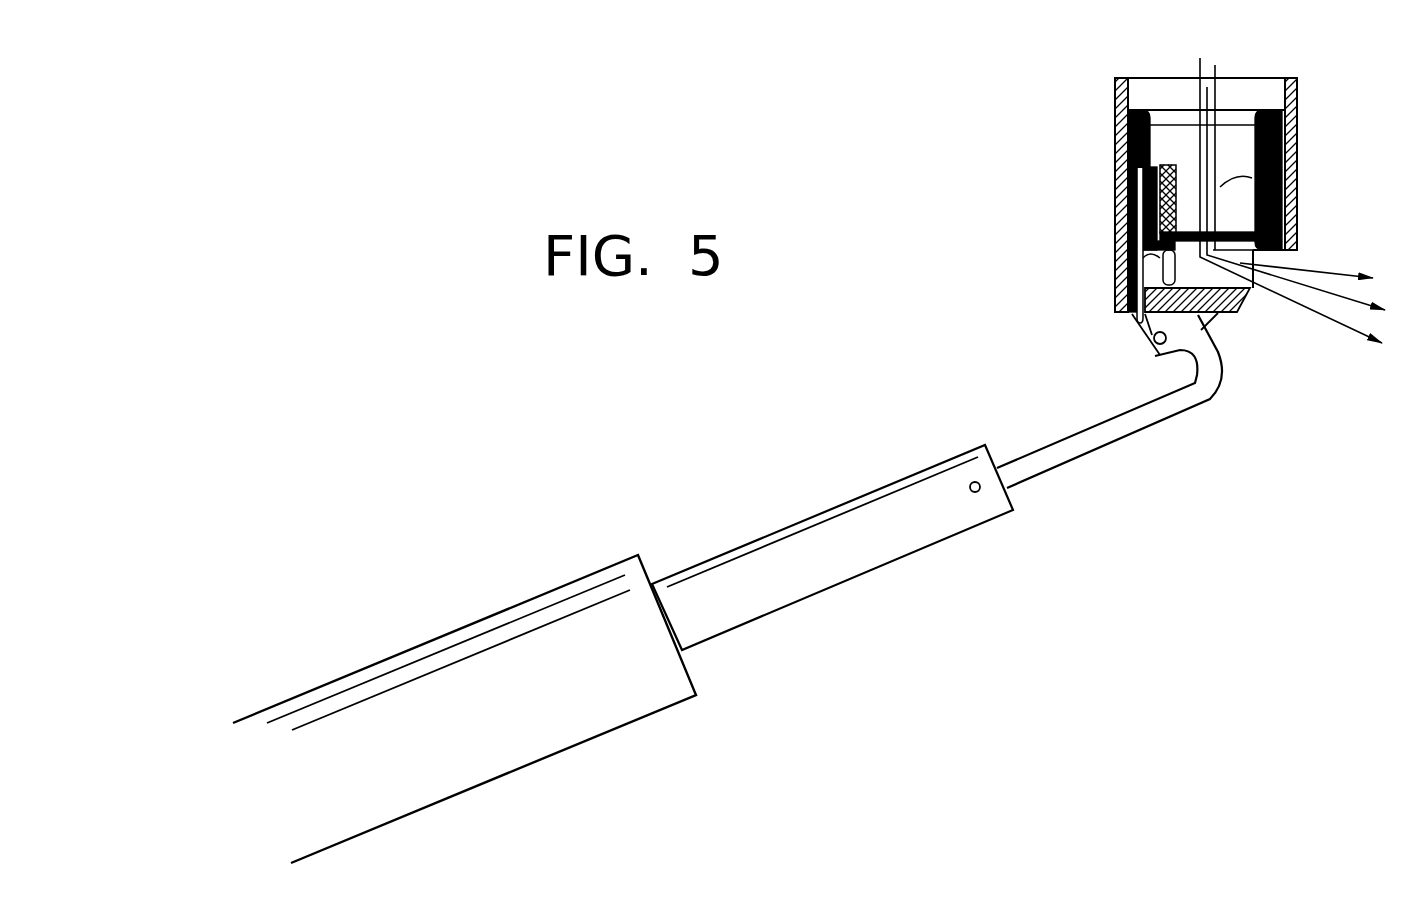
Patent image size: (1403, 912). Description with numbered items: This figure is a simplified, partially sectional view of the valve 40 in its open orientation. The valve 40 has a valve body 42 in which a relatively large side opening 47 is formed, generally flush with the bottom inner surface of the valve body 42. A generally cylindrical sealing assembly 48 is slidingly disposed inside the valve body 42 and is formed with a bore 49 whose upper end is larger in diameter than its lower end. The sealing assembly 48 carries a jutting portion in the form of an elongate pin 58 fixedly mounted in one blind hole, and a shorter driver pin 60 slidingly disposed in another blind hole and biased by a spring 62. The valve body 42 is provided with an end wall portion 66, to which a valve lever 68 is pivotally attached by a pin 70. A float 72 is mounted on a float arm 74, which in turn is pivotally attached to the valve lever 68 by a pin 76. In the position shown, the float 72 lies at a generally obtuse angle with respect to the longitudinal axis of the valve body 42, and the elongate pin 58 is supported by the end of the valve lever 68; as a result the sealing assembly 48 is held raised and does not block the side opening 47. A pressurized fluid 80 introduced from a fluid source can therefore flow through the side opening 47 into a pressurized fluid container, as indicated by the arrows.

The valve 40 is at (965, 75).
The valve body 42 is at (1115, 118).
The side opening 47 is at (1256, 259).
The sealing assembly 48 is at (1295, 150).
The bore 49 is at (1292, 197).
The elongate pin 58 is at (1137, 302).
The driver pin 60 is at (1135, 267).
The spring 62 is at (1118, 187).
The end wall portion 66 is at (1130, 325).
The valve lever 68 is at (1168, 410).
The pin 70 is at (1157, 353).
The float 72 is at (570, 598).
The float arm 74 is at (813, 538).
The pin 76 is at (971, 492).
The pressurized fluid 80 is at (1340, 297).